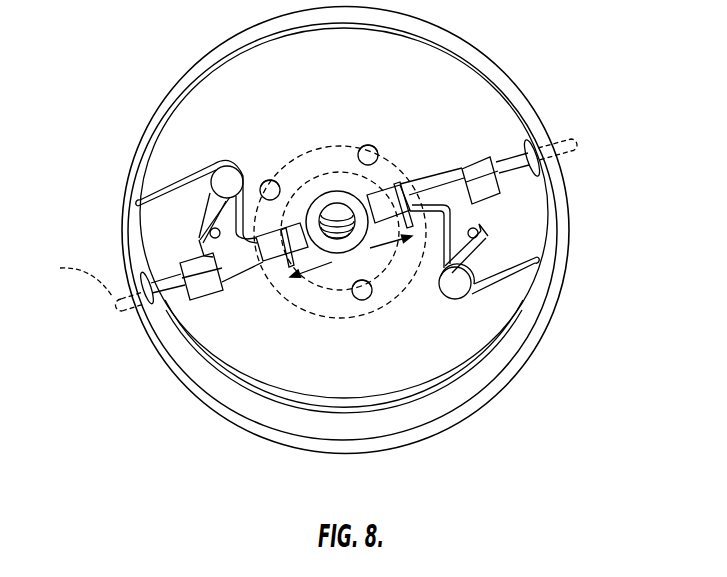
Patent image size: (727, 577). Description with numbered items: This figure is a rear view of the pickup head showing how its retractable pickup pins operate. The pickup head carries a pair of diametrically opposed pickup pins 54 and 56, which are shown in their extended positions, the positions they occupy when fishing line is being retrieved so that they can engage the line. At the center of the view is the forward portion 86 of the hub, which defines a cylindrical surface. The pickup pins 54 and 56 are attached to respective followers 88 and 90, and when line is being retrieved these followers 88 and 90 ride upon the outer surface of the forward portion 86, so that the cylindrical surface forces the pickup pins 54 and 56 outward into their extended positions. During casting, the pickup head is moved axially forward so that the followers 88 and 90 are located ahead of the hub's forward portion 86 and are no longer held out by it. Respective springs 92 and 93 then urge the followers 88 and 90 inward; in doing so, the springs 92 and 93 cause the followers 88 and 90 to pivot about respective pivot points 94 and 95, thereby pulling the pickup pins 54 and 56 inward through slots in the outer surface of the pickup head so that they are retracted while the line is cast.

The pickup pin 54 is at (512, 165).
The pickup pin 56 is at (206, 318).
The forward portion 86 is at (309, 157).
The follower 88 is at (437, 187).
The follower 90 is at (247, 264).
The spring 92 is at (484, 292).
The spring 93 is at (197, 172).
The pivot point 94 is at (432, 300).
The pivot point 95 is at (228, 175).